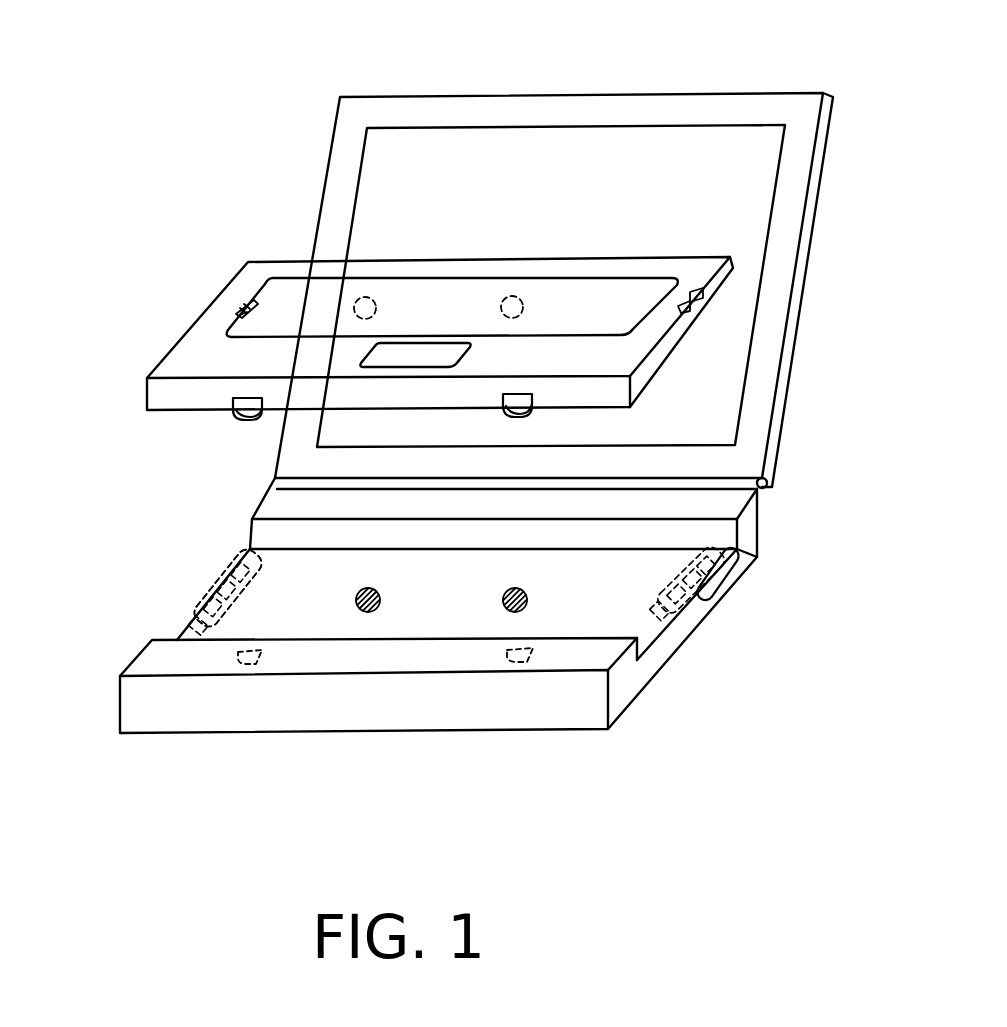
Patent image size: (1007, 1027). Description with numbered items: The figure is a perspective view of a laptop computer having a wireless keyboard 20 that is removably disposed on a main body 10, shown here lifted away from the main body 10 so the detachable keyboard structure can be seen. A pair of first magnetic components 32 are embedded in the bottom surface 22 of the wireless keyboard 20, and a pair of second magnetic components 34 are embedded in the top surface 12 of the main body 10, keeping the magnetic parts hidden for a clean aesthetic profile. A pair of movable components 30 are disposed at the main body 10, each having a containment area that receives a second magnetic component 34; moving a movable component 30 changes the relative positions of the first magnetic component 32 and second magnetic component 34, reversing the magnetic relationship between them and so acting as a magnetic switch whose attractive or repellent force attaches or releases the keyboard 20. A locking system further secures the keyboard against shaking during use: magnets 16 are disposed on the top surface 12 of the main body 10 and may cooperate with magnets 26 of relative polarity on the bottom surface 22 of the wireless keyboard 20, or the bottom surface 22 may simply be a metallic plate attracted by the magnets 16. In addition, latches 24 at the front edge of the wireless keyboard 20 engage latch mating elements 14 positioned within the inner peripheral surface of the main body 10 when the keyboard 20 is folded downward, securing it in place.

The main body 10 is at (567, 738).
The top surface 12 is at (452, 608).
The latch mating elements 14 is at (250, 666).
The magnets 16 is at (357, 613).
The wireless keyboard 20 is at (591, 254).
The bottom surface 22 is at (673, 356).
The latches 24 is at (245, 413).
The magnets 26 is at (361, 296).
The movable component 30 is at (182, 627).
The first magnetic component 32 is at (238, 306).
The second magnetic component 34 is at (247, 556).